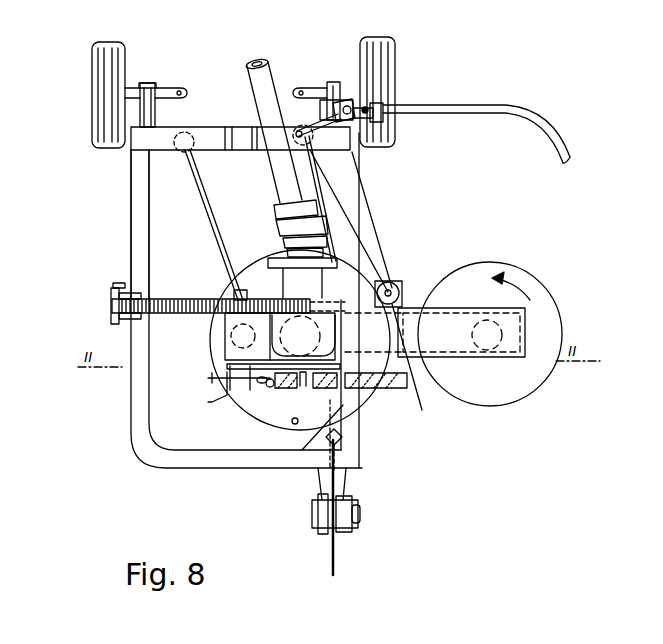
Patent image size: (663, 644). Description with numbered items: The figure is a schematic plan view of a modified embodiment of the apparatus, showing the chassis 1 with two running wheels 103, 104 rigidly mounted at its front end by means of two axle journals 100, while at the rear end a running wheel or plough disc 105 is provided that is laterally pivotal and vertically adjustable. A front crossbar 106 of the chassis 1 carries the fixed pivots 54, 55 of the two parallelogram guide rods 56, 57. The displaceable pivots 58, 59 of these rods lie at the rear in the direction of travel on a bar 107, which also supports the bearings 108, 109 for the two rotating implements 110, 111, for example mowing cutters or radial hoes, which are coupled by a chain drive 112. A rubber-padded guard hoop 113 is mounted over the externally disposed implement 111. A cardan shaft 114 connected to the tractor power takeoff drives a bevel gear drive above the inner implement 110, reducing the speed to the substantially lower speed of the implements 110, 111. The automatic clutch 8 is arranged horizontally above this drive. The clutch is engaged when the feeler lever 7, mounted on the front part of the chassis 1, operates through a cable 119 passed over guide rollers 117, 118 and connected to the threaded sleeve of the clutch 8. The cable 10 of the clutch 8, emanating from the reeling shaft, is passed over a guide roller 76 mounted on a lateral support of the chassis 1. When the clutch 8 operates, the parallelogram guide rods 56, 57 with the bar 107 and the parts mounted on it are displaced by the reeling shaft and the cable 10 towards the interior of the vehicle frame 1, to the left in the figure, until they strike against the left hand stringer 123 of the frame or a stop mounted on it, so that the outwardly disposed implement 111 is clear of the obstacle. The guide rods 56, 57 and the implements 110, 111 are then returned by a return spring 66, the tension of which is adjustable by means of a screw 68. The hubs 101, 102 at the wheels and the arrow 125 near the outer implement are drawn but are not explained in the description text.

The chassis 1 is at (222, 460).
The feeler lever 7 is at (516, 107).
The automatic clutch 8 is at (256, 263).
The cable 10 is at (172, 298).
The fixed pivot 54 is at (182, 150).
The fixed pivot 55 is at (317, 153).
The parallelogram guide rod 56 is at (207, 225).
The parallelogram guide rod 57 is at (334, 209).
The displaceable pivot 58 is at (225, 338).
The displaceable pivot 59 is at (378, 338).
The return spring 66 is at (392, 390).
The screw 68 is at (230, 401).
The guide roller 76 is at (110, 300).
The axle journal 100 is at (168, 93).
The wheel hub 101 is at (150, 118).
The wheel hub 102 is at (328, 106).
The running wheel 103 is at (100, 98).
The running wheel 104 is at (383, 70).
The running wheel or plough disc 105 is at (337, 528).
The front crossbar 106 is at (218, 133).
The bar 107 is at (424, 365).
The bearing 108 is at (277, 384).
The bearing 109 is at (502, 333).
The rotating implement 110 is at (294, 424).
The rotating implement 111 is at (495, 346).
The chain drive 112 is at (457, 320).
The rubber-padded guard hoop 113 is at (503, 404).
The cardan shaft 114 is at (264, 62).
The guide roller 117 is at (234, 293).
The guide roller 118 is at (394, 283).
The cable 119 is at (374, 243).
The left hand stringer 123 is at (136, 238).
The rotation arrow 125 is at (520, 285).